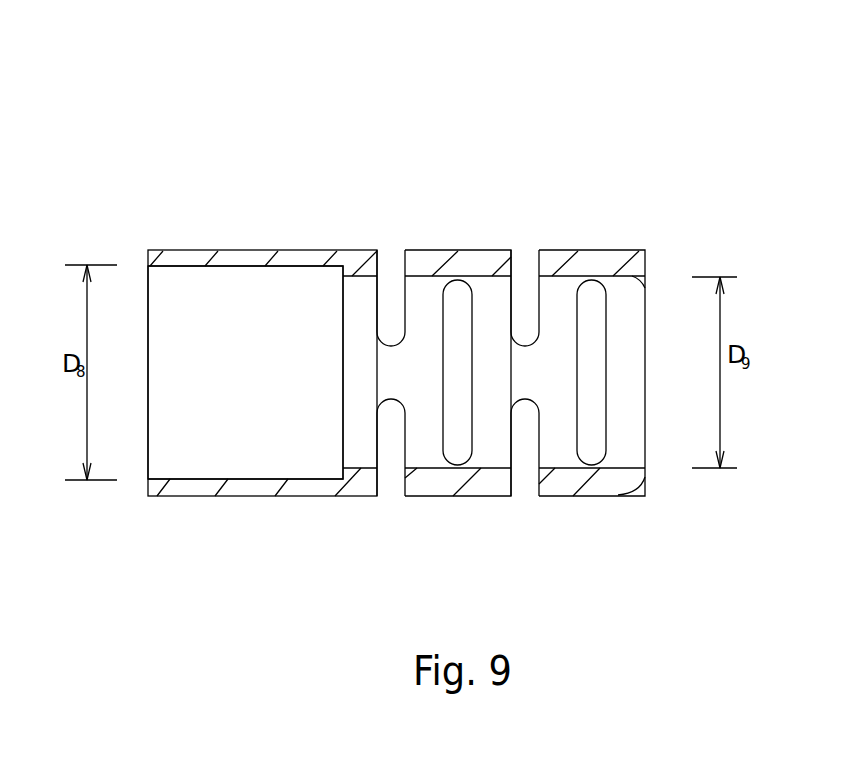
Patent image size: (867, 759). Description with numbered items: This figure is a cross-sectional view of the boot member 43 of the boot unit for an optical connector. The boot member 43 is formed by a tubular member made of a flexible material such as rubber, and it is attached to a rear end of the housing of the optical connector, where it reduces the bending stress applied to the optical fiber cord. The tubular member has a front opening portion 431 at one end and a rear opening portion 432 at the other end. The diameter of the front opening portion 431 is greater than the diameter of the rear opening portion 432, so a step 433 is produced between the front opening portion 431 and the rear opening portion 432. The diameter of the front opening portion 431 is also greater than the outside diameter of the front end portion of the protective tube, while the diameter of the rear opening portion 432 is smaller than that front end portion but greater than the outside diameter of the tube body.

The boot member 43 is at (406, 270).
The front opening portion 431 is at (183, 268).
The rear opening portion 432 is at (645, 290).
The step 433 is at (343, 268).